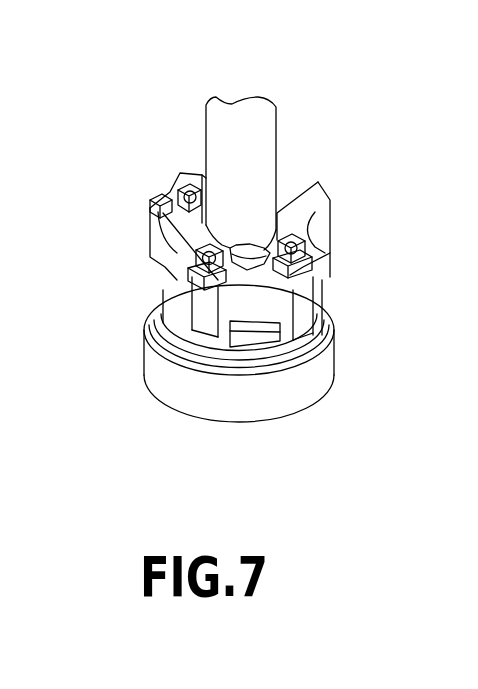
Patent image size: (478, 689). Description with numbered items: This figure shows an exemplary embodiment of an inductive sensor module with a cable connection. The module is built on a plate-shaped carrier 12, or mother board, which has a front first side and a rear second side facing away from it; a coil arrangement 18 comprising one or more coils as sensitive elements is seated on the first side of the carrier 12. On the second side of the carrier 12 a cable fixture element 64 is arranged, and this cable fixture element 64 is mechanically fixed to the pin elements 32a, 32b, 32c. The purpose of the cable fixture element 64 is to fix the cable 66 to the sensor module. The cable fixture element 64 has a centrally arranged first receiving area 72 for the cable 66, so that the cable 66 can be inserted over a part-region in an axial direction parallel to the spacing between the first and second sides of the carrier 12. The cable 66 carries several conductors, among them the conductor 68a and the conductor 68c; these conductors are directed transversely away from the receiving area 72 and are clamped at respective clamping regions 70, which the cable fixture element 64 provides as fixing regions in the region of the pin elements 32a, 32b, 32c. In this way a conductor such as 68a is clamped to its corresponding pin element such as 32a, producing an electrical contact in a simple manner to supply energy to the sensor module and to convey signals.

The carrier 12 is at (322, 307).
The coil arrangement 18 is at (178, 422).
The pin element 32a is at (165, 190).
The pin element 32b is at (237, 278).
The pin element 32c is at (315, 243).
The cable fixture element 64 is at (310, 205).
The cable 66 is at (247, 143).
The conductor 68a is at (173, 190).
The conductor 68c is at (320, 305).
The clamping region 70 is at (148, 208).
The first receiving area 72 is at (247, 240).